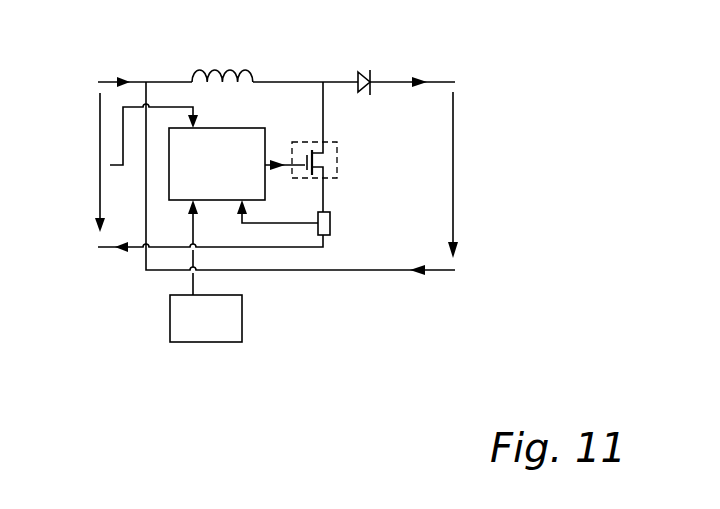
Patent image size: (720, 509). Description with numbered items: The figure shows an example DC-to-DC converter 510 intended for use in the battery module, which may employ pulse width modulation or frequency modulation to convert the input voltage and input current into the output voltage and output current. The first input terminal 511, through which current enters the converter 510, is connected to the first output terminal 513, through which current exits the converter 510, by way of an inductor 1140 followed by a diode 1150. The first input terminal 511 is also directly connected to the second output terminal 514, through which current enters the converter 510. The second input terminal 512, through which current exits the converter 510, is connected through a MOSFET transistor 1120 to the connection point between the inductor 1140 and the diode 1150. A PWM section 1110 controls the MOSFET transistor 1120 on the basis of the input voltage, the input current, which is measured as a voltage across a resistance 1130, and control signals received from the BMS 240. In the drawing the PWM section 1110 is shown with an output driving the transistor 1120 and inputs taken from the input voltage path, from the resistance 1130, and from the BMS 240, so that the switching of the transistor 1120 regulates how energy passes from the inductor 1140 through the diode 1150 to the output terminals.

The DC-to-DC converter 510 is at (70, 385).
The first input terminal 511 is at (121, 78).
The second input terminal 512 is at (186, 244).
The first output terminal 513 is at (436, 79).
The second output terminal 514 is at (455, 266).
The PWM section 1110 is at (217, 200).
The MOSFET transistor 1120 is at (313, 142).
The resistance 1130 is at (330, 232).
The inductor 1140 is at (217, 70).
The diode 1150 is at (367, 70).
The BMS 240 is at (217, 342).